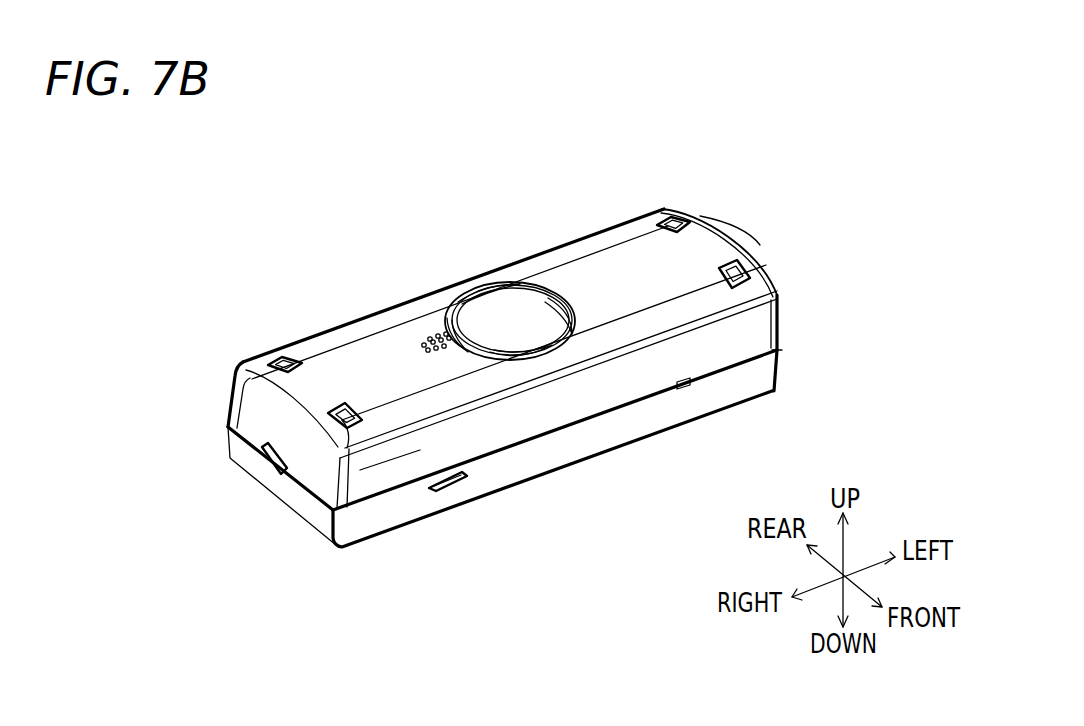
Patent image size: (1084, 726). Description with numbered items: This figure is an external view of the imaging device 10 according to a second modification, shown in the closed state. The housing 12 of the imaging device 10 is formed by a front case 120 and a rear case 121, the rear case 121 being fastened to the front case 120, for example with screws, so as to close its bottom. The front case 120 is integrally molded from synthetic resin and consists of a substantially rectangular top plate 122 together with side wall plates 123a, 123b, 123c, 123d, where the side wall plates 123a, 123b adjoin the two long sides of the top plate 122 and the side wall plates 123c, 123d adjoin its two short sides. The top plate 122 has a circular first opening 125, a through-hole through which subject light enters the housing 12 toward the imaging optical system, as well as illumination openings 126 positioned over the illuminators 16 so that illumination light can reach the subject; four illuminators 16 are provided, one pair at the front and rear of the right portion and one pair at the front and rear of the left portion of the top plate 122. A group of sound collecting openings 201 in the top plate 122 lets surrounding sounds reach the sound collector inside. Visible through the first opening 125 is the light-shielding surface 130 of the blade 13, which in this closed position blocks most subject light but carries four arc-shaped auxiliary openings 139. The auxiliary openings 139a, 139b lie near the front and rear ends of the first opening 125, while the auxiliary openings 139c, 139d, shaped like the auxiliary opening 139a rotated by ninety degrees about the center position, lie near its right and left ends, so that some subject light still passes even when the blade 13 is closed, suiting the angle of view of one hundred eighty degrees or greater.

The imaging device 10 is at (302, 198).
The housing 12 is at (128, 490).
The blade 13 is at (473, 518).
The illuminators 16 is at (678, 226).
The front case 120 is at (600, 248).
The rear case 121 is at (745, 380).
The top plate 122 is at (697, 313).
The side wall plate 123a is at (393, 467).
The side wall plate 123b is at (302, 343).
The side wall plate 123c is at (262, 432).
The side wall plate 123d is at (744, 245).
The first opening 125 is at (512, 297).
The illumination openings 126 is at (276, 362).
The light-shielding surface 130 is at (471, 478).
The auxiliary opening 139 is at (561, 327).
The auxiliary opening 139a is at (498, 290).
The auxiliary opening 139b is at (546, 355).
The auxiliary opening 139c is at (455, 305).
The auxiliary opening 139d is at (562, 320).
The sound collecting openings 201 is at (443, 352).